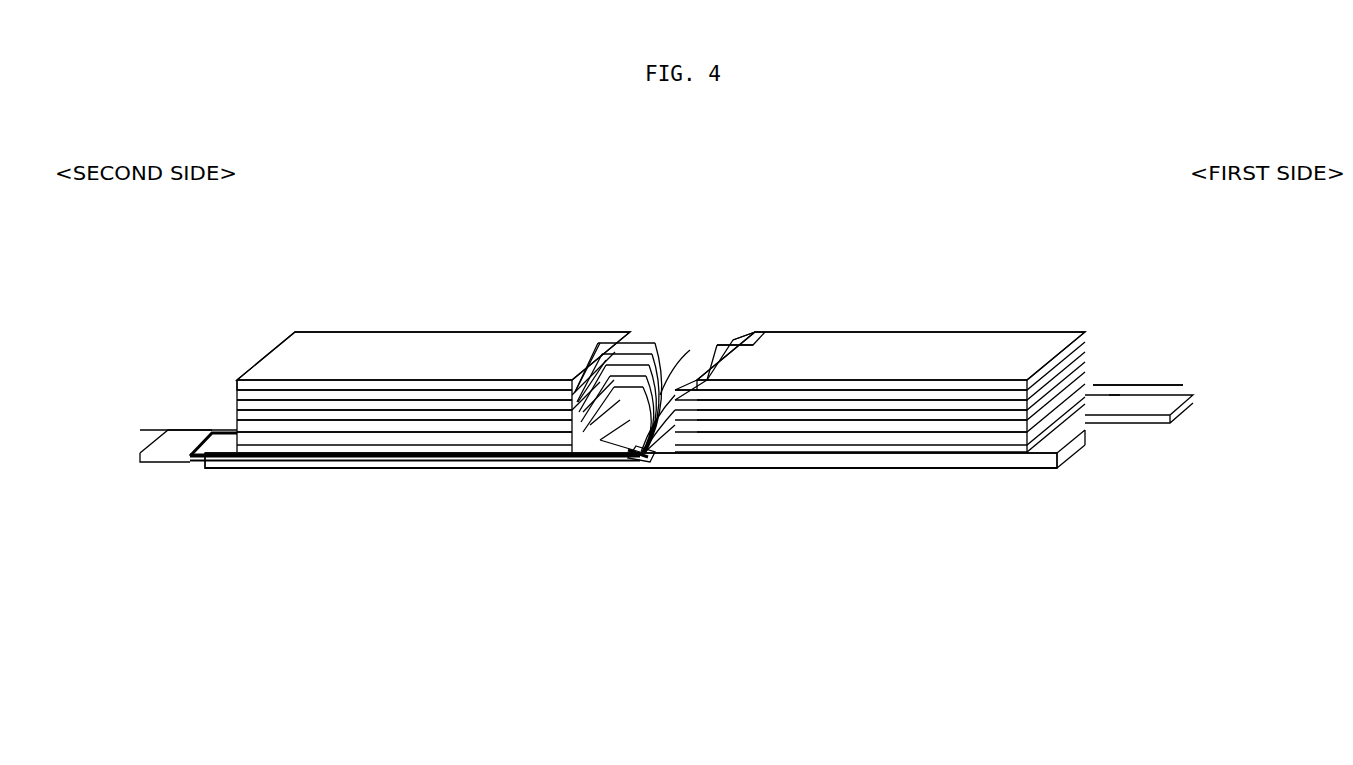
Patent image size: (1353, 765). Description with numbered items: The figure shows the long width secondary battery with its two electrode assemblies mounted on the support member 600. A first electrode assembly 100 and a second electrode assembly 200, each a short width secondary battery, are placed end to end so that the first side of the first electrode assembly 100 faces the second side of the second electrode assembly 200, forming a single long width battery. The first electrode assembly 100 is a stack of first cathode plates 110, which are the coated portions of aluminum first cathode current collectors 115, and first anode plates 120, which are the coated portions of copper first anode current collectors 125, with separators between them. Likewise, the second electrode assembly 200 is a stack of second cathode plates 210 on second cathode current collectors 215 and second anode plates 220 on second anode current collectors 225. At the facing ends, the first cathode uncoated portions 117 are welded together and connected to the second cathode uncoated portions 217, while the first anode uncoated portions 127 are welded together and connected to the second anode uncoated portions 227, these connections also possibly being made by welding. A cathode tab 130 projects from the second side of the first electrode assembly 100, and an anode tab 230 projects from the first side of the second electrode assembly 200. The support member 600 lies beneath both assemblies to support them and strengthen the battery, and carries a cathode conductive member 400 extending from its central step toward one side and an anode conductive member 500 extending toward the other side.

The first electrode assembly 100 is at (490, 272).
The first cathode plate 110 is at (325, 325).
The first cathode current collector 115 is at (422, 335).
The first cathode uncoated portion 117 is at (590, 462).
The first anode plate 120 is at (395, 457).
The first anode current collector 125 is at (472, 465).
The first anode uncoated portion 127 is at (632, 342).
The cathode tab 130 is at (180, 440).
The second electrode assembly 200 is at (1003, 268).
The second cathode plate 210 is at (790, 330).
The second cathode current collector 215 is at (883, 335).
The second cathode uncoated portion 217 is at (685, 445).
The second anode plate 220 is at (890, 452).
The second anode current collector 225 is at (968, 450).
The second anode uncoated portion 227 is at (725, 342).
The anode tab 230 is at (1185, 392).
The cathode conductive member 400 is at (633, 470).
The anode conductive member 500 is at (672, 392).
The support member 600 is at (750, 462).